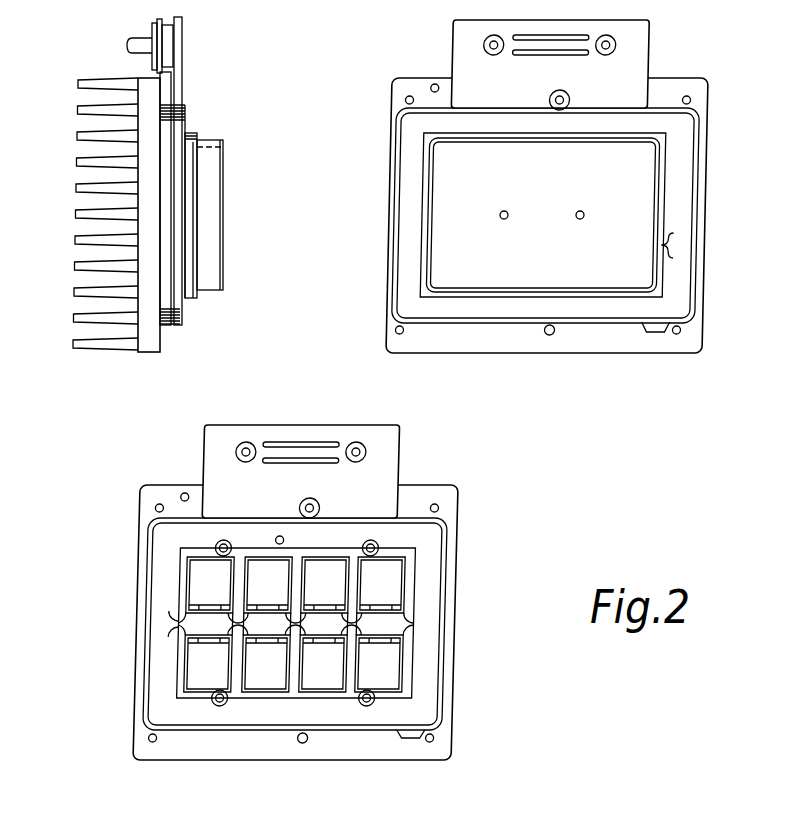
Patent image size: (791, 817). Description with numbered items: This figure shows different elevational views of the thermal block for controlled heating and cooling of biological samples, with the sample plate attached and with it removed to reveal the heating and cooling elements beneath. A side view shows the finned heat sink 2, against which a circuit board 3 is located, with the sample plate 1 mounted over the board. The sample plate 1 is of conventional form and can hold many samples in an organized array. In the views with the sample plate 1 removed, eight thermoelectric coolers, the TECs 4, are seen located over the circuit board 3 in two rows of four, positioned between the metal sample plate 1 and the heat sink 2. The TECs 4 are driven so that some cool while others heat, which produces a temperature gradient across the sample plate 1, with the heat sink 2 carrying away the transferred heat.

The sample plate 1 is at (208, 184).
The heat sink 2 is at (142, 333).
The circuit board 3 is at (475, 65).
The TECs 4 is at (197, 592).